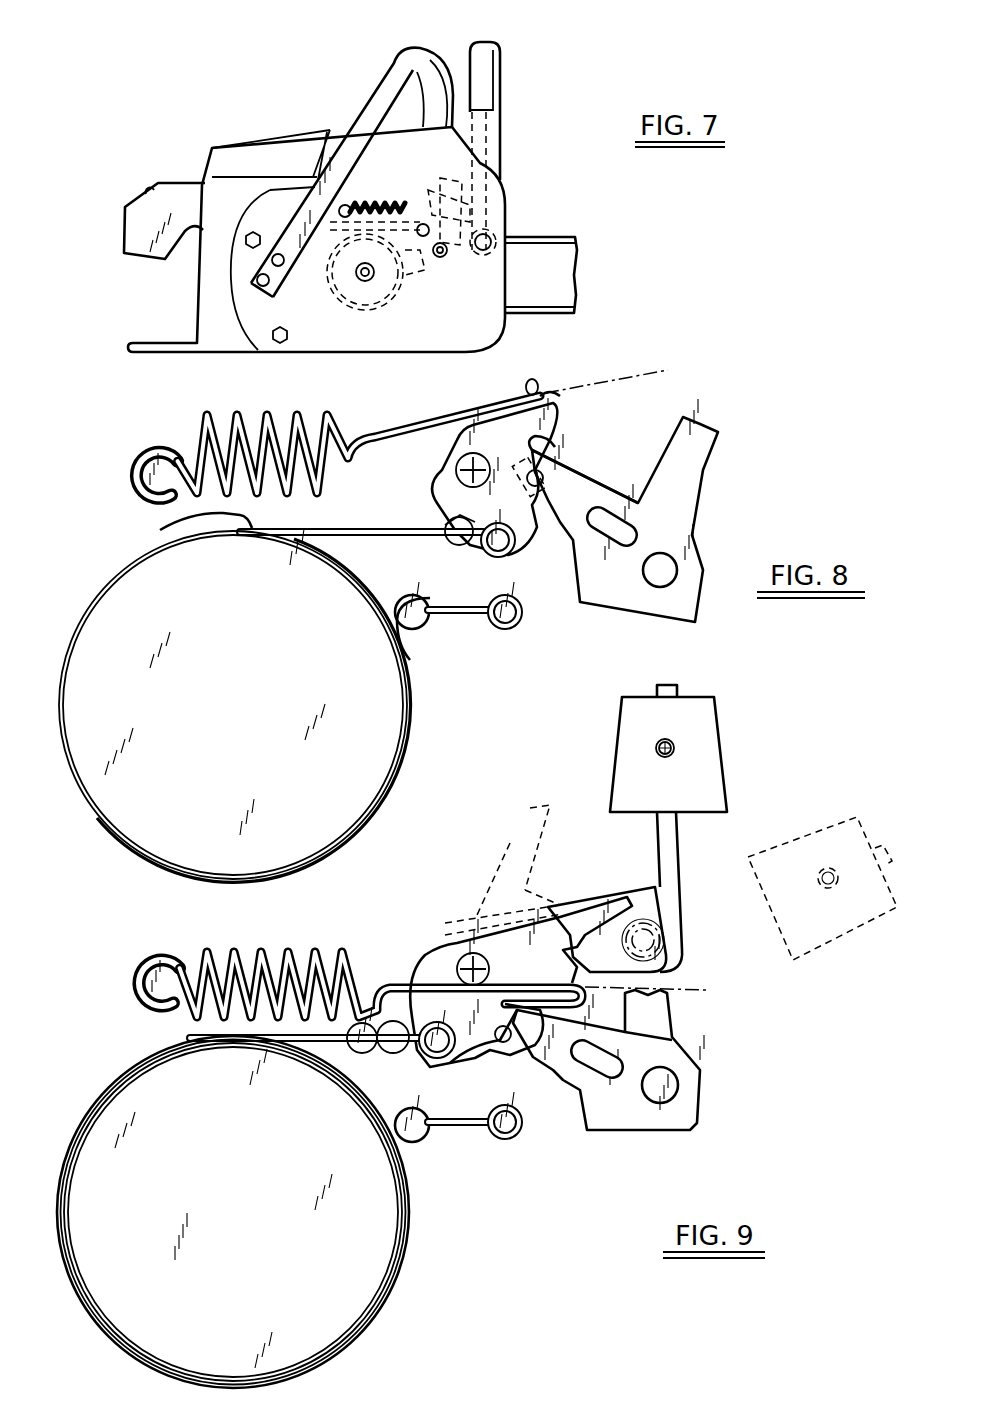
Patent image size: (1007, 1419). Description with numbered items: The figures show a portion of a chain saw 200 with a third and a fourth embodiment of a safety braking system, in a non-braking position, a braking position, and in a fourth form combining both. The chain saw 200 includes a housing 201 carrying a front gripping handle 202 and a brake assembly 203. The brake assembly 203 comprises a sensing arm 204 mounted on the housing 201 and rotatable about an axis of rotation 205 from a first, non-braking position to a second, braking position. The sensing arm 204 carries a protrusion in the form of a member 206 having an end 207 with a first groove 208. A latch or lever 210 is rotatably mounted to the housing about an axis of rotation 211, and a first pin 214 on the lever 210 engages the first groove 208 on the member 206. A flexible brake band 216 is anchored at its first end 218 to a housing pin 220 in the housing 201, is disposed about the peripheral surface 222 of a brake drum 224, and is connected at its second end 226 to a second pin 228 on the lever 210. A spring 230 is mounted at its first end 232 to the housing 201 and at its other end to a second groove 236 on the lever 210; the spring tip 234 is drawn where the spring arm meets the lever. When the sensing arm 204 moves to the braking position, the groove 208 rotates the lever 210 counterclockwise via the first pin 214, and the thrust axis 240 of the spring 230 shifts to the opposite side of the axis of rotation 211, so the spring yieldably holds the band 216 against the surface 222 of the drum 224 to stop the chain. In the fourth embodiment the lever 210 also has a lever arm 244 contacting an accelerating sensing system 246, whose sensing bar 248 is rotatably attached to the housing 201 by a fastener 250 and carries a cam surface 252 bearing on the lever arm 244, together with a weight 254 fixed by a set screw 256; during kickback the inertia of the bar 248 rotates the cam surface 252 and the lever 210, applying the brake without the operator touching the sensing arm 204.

In FIG. 7, the chain saw 200 is at (522, 111).
In FIG. 7, the housing 201 is at (505, 205).
In FIG. 7, the front gripping handle 202 is at (398, 62).
In FIG. 7, the brake assembly 203 is at (438, 272).
In FIG. 7, the sensing arm 204 is at (500, 68).
In FIG. 8, the sensing arm 204 is at (707, 477).
In FIG. 9, the sensing arm 204 is at (657, 1027).
In FIG. 7, the axis of rotation 205 is at (492, 240).
In FIG. 8, the axis of rotation 205 is at (660, 577).
In FIG. 9, the axis of rotation 205 is at (660, 1083).
In FIG. 8, the member 206 is at (567, 543).
In FIG. 9, the member 206 is at (560, 1087).
In FIG. 8, the end 207 is at (540, 467).
In FIG. 9, the end 207 is at (503, 1045).
In FIG. 8, the first groove 208 is at (553, 503).
In FIG. 9, the first groove 208 is at (517, 1050).
In FIG. 7, the lever 210 is at (445, 195).
In FIG. 8, the lever 210 is at (445, 527).
In FIG. 9, the lever 210 is at (410, 957).
In FIG. 7, the axis of rotation 211 is at (437, 203).
In FIG. 8, the axis of rotation 211 is at (440, 468).
In FIG. 9, the axis of rotation 211 is at (457, 953).
In FIG. 8, the first pin 214 is at (563, 448).
In FIG. 9, the first pin 214 is at (492, 1052).
In FIG. 8, the flexible brake band 216 is at (175, 523).
In FIG. 9, the flexible brake band 216 is at (410, 1237).
In FIG. 8, the first end 218 is at (448, 624).
In FIG. 9, the first end 218 is at (440, 1135).
In FIG. 8, the housing pin 220 is at (502, 630).
In FIG. 9, the housing pin 220 is at (503, 1142).
In FIG. 8, the peripheral surface 222 is at (357, 587).
In FIG. 9, the peripheral surface 222 is at (360, 1327).
In FIG. 8, the brake drum 224 is at (262, 741).
In FIG. 9, the brake drum 224 is at (262, 1208).
In FIG. 8, the second end 226 is at (490, 555).
In FIG. 9, the second end 226 is at (365, 1030).
In FIG. 8, the second pin 228 is at (518, 553).
In FIG. 9, the second pin 228 is at (440, 1025).
In FIG. 8, the spring 230 is at (262, 425).
In FIG. 9, the spring 230 is at (245, 950).
In FIG. 8, the first end 232 is at (160, 450).
In FIG. 9, the first end 232 is at (142, 958).
In FIG. 8, the spring arm tip 234 is at (530, 385).
In FIG. 9, the spring arm tip 234 is at (680, 1043).
In FIG. 8, the second groove 236 is at (560, 400).
In FIG. 9, the second groove 236 is at (623, 972).
In FIG. 8, the thrust axis 240 is at (665, 370).
In FIG. 9, the thrust axis 240 is at (707, 990).
In FIG. 9, the lever arm 244 is at (510, 843).
In FIG. 9, the accelerating sensing system 246 is at (733, 801).
In FIG. 9, the sensing bar 248 is at (677, 840).
In FIG. 9, the fastener 250 is at (665, 920).
In FIG. 9, the cam surface 252 is at (630, 893).
In FIG. 9, the weight 254 is at (720, 718).
In FIG. 9, the set screw 256 is at (673, 752).